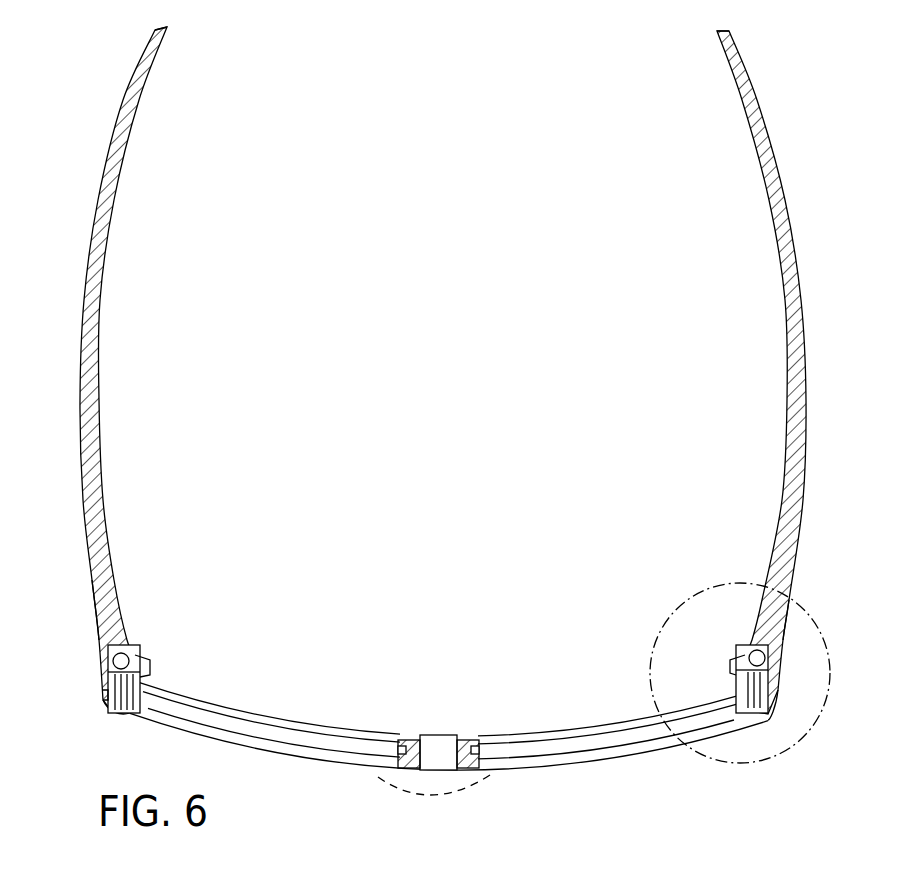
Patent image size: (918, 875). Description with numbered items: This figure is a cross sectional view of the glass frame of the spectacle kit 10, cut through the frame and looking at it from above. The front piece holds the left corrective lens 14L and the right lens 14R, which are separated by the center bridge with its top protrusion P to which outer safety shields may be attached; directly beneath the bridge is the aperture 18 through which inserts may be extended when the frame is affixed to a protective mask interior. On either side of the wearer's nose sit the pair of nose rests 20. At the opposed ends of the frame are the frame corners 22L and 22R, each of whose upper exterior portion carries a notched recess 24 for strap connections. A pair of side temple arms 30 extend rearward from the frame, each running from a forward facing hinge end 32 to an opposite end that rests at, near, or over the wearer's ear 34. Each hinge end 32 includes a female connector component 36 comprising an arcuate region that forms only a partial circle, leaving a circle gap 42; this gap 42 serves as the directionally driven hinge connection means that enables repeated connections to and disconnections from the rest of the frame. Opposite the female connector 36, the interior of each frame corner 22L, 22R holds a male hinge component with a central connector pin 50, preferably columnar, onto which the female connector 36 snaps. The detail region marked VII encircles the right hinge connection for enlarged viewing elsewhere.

The spectacle kit 10 is at (403, 427).
The side temple arm 30 is at (114, 262).
The wearer's ear 34 is at (158, 60).
The hinge end 32 is at (93, 606).
The left corrective lens 14L is at (212, 722).
The right lens 14R is at (568, 740).
The aperture 18 is at (438, 748).
The nose rests 20 is at (400, 742).
The top protrusion P is at (462, 787).
The left frame corner 22L is at (128, 716).
The right frame corner 22R is at (751, 724).
The central connector pin 50 is at (128, 655).
The circle gap 42 is at (122, 672).
The female connector component 36 is at (152, 650).
The notched recess 24 is at (96, 695).
The detail circle VII is at (688, 600).